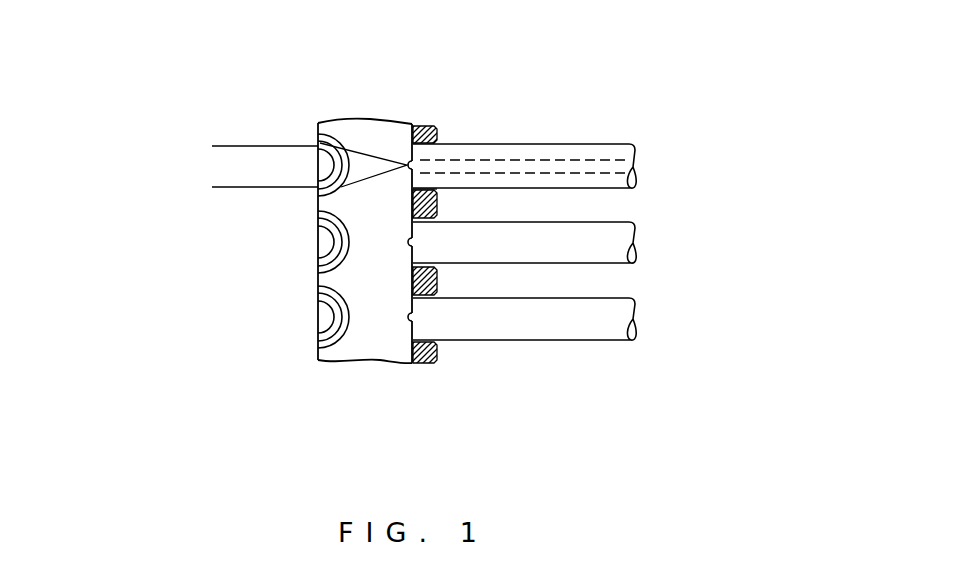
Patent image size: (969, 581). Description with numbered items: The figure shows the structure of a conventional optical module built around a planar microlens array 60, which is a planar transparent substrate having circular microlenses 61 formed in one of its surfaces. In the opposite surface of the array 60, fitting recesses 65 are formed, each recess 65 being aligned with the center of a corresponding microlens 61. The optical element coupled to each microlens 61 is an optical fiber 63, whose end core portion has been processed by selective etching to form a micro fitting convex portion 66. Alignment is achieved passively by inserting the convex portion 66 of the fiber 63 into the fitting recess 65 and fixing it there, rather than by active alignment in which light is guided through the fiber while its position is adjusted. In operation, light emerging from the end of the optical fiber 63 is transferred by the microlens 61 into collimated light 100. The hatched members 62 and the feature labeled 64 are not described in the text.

The collimated light 100 is at (258, 165).
The planar microlens array 60 is at (367, 350).
The microlens 61 is at (327, 318).
The ferrule holder / fixing member 62 is at (438, 127).
The optical fiber 63 is at (567, 143).
The fiber end face 64 is at (437, 191).
The fitting recess 65 is at (406, 161).
The fitting convex portion 66 is at (412, 317).